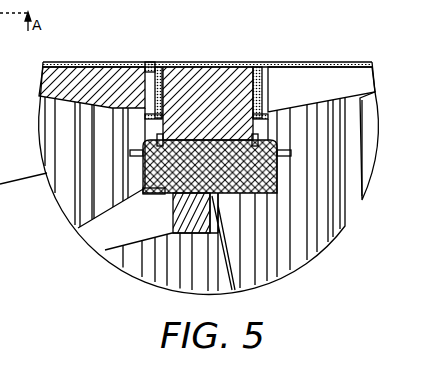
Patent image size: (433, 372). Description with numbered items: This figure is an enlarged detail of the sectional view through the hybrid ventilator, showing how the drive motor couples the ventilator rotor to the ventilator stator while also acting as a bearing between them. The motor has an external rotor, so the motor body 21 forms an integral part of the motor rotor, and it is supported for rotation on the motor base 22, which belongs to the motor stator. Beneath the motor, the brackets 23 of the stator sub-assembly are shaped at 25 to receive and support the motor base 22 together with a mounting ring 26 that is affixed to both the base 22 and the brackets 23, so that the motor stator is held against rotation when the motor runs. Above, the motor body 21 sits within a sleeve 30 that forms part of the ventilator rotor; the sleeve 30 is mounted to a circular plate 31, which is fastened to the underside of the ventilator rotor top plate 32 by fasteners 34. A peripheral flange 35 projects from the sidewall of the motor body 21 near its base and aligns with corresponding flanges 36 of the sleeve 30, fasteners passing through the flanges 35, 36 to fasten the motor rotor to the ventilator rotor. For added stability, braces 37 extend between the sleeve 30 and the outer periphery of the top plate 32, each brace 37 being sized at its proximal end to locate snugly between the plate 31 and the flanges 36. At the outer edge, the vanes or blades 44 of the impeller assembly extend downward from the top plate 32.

The motor body 21 is at (208, 100).
The motor base 22 is at (237, 172).
The brackets 23 is at (97, 235).
The shaped portion of brackets 25 is at (160, 197).
The mounting ring 26 is at (145, 193).
The sleeve 30 is at (263, 90).
The circular plate 31 is at (153, 66).
The ventilator rotor top plate 32 is at (108, 60).
The fasteners 34 is at (146, 61).
The peripheral flange 35 is at (150, 123).
The flanges of the sleeve 36 is at (262, 107).
The braces 37 is at (73, 78).
The vanes or blades 44 is at (367, 150).